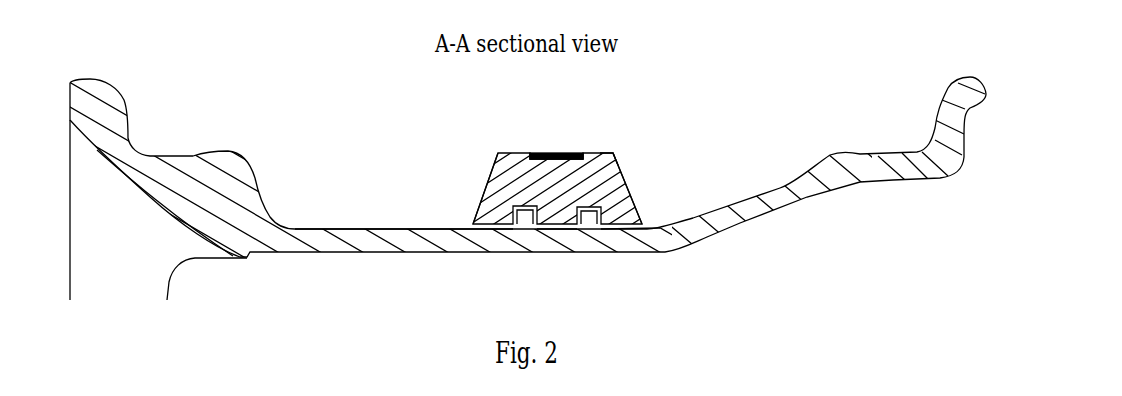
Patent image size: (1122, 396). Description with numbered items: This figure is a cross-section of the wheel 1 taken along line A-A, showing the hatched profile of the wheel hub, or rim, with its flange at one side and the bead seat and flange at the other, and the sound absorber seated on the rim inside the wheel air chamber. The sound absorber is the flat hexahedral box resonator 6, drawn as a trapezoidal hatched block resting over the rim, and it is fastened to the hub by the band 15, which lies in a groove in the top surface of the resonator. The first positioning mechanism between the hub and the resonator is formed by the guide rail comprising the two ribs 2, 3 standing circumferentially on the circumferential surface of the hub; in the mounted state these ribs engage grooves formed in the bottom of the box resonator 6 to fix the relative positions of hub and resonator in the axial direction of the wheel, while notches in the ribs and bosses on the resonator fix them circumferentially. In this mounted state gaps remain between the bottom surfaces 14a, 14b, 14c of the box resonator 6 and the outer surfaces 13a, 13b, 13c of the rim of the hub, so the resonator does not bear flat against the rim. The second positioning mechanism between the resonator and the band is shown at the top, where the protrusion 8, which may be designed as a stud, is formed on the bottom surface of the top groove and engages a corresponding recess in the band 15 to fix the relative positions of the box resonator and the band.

The wheel 1 is at (208, 167).
The rib 2 is at (519, 229).
The rib 3 is at (592, 229).
The box resonator 6 is at (490, 174).
The protrusion 8 is at (556, 152).
The outer surface 13a is at (463, 229).
The outer surface 13b is at (559, 229).
The outer surface 13c is at (668, 230).
The bottom surface 14a is at (474, 219).
The bottom surface 14b is at (614, 153).
The bottom surface 14c is at (633, 197).
The band 15 is at (530, 150).